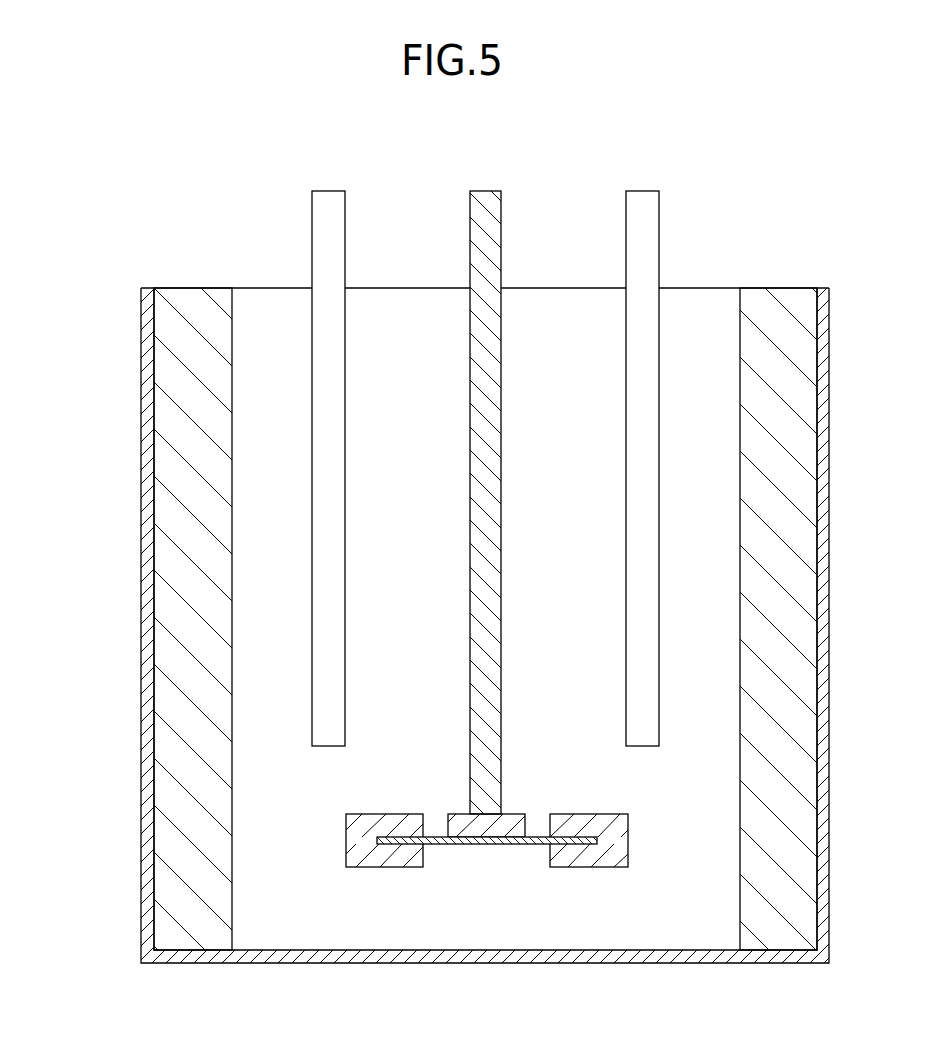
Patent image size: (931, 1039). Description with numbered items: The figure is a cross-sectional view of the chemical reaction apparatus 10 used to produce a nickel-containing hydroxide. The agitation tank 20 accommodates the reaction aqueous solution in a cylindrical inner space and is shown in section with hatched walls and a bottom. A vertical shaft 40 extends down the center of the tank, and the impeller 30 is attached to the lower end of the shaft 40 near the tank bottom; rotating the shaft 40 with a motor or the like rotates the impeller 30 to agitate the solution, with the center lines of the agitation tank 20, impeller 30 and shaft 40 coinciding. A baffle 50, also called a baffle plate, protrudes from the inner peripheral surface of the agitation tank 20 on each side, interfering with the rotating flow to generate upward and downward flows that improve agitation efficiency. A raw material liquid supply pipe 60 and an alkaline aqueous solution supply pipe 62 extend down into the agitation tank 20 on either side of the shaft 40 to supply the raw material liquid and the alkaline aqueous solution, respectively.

The chemical reaction apparatus 10 is at (127, 471).
The agitation tank 20 is at (141, 557).
The impeller 30 is at (386, 857).
The shaft 40 is at (487, 200).
The baffle 50 is at (193, 300).
The raw material liquid supply pipe 60 is at (327, 200).
The alkaline aqueous solution supply pipe 62 is at (641, 200).